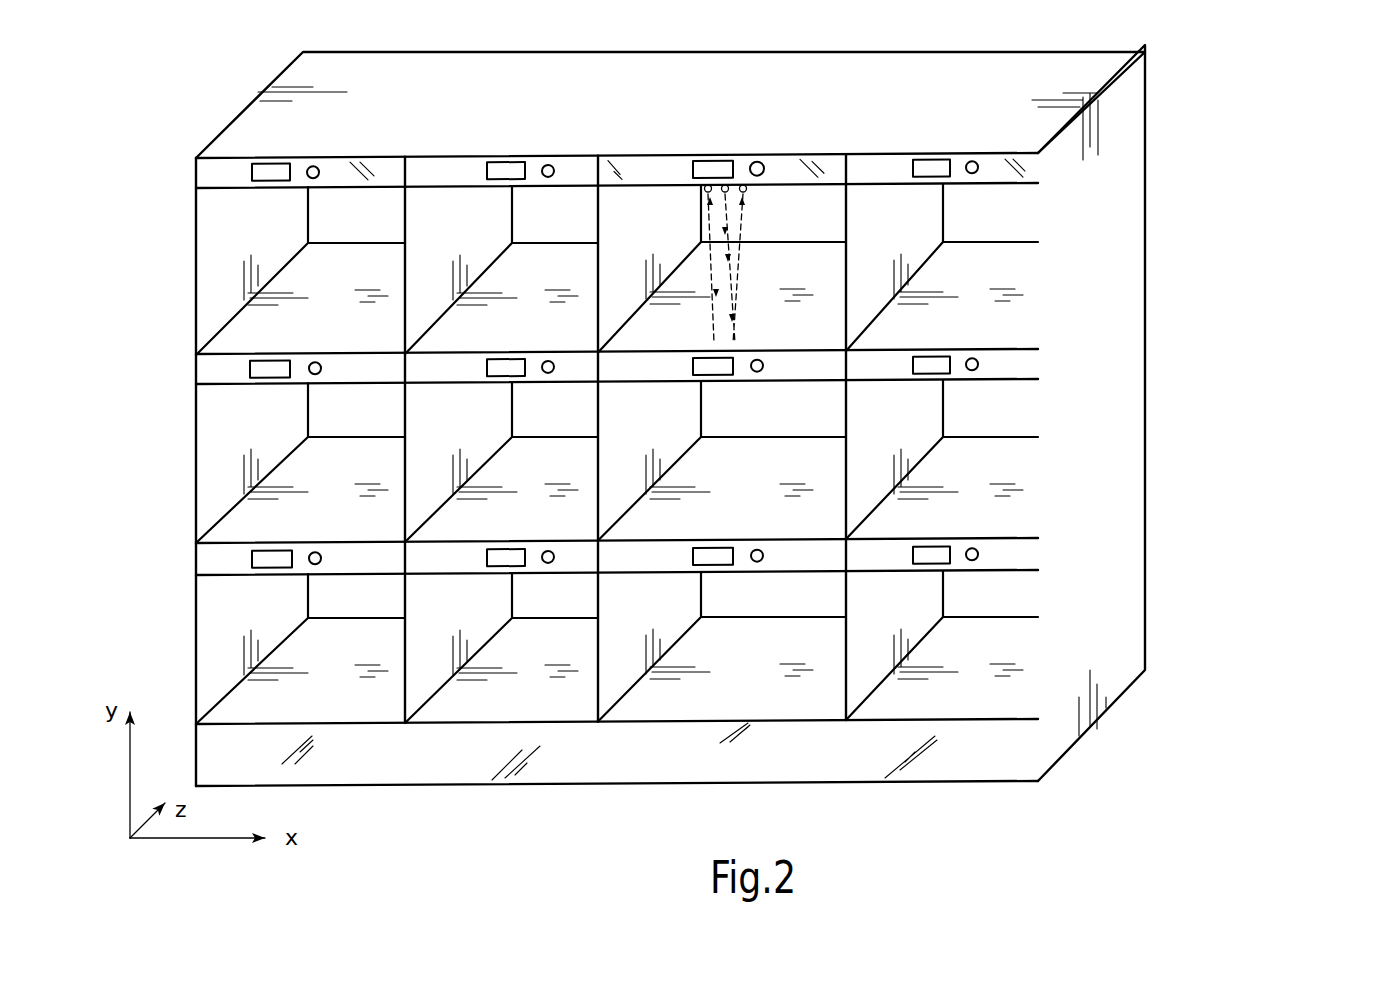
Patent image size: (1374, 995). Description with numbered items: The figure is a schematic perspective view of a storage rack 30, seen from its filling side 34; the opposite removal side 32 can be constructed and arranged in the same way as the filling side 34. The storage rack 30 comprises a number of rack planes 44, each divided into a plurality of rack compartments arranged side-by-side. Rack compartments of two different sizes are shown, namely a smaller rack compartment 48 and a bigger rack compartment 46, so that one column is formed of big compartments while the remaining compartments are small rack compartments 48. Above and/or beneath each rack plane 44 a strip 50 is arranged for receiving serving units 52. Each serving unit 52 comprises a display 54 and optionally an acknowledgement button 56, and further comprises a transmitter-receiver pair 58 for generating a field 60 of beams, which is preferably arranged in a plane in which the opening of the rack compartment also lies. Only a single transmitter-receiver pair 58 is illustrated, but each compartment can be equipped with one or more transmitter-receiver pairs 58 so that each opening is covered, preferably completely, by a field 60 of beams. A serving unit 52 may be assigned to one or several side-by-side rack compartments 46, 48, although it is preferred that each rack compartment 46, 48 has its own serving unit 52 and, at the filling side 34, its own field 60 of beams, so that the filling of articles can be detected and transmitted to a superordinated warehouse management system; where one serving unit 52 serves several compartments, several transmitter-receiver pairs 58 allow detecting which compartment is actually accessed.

The storage rack 30 is at (1168, 268).
The removal side 32 is at (1156, 411).
The filling side 34 is at (227, 436).
The rack plane 44 is at (1040, 182).
The bigger rack compartment 46 is at (703, 676).
The smaller rack compartment 48 is at (363, 676).
The strip 50 is at (193, 178).
The serving unit 52 is at (380, 156).
The display 54 is at (503, 163).
The acknowledgement button 56 is at (762, 162).
The transmitter-receiver pair 58 is at (694, 192).
The field of beams 60 is at (732, 277).